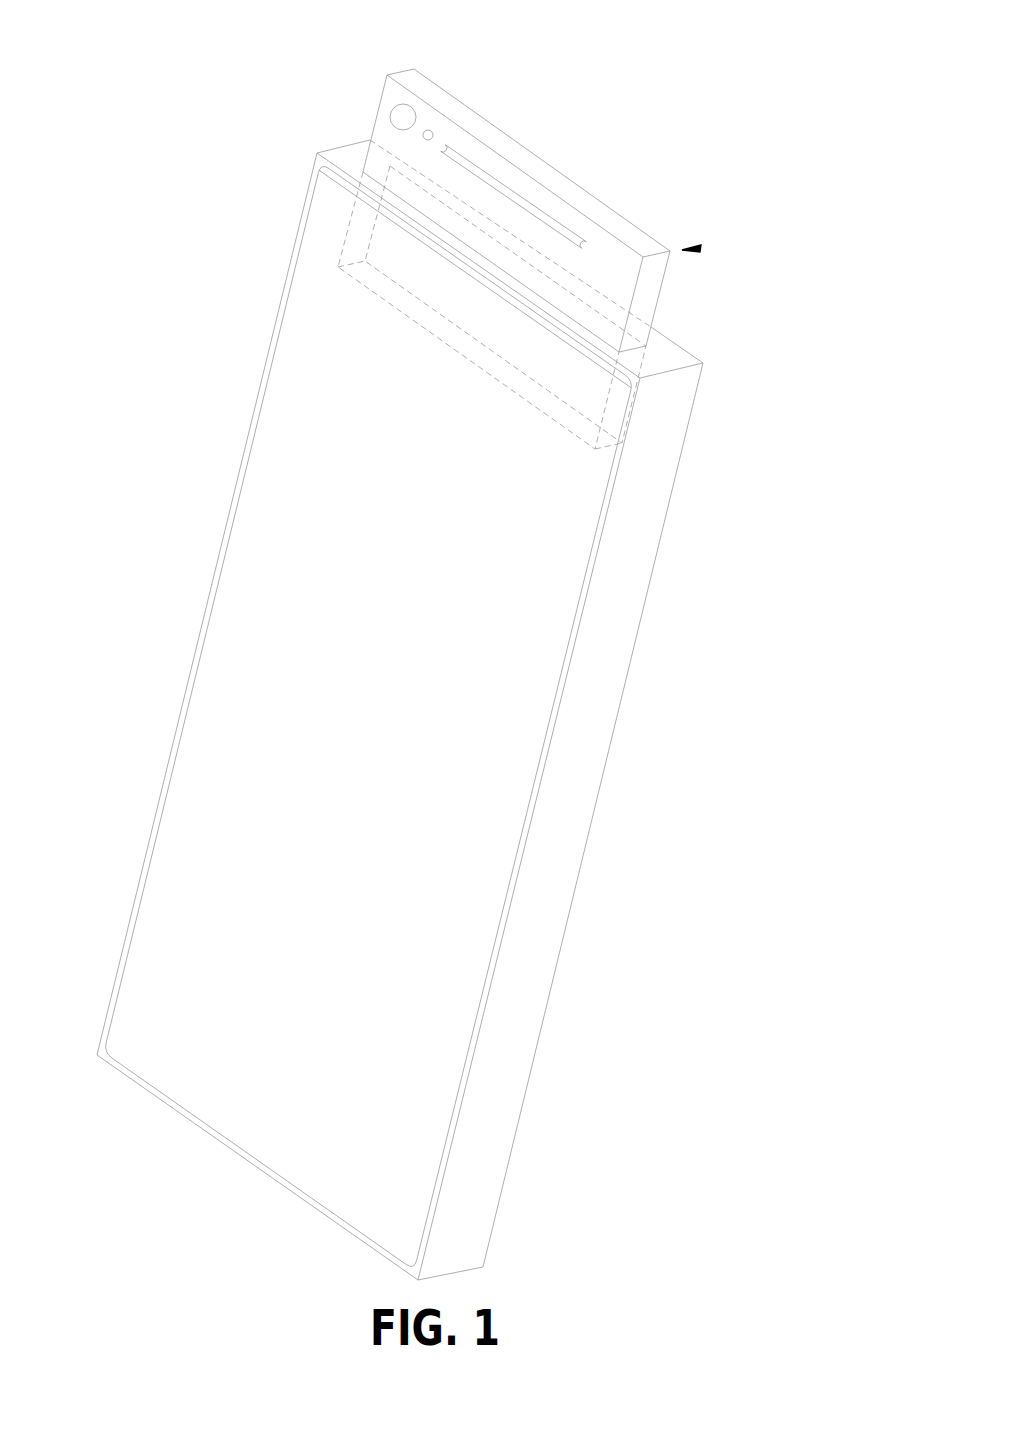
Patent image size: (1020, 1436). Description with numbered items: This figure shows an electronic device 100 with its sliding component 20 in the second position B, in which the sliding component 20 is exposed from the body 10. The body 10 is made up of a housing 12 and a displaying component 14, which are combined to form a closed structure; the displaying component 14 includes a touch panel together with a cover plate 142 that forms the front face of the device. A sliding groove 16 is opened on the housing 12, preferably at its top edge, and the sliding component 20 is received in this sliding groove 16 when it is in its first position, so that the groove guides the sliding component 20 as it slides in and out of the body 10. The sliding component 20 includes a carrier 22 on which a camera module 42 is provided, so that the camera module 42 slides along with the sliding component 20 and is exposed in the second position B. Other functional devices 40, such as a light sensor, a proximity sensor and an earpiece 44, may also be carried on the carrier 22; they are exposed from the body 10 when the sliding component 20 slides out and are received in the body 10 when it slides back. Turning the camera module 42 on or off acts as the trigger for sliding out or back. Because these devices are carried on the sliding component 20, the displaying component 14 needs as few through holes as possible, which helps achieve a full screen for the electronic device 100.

The electronic device 100 is at (127, 287).
The body 10 is at (573, 712).
The housing 12 is at (550, 822).
The displaying component 14 is at (170, 573).
The cover plate 142 is at (278, 488).
The sliding groove 16 is at (363, 232).
The sliding component 20 is at (607, 277).
The carrier 22 is at (597, 243).
The functional devices 40 is at (429, 131).
The camera module 42 is at (403, 115).
The earpiece 44 is at (476, 170).
The second position B is at (700, 248).